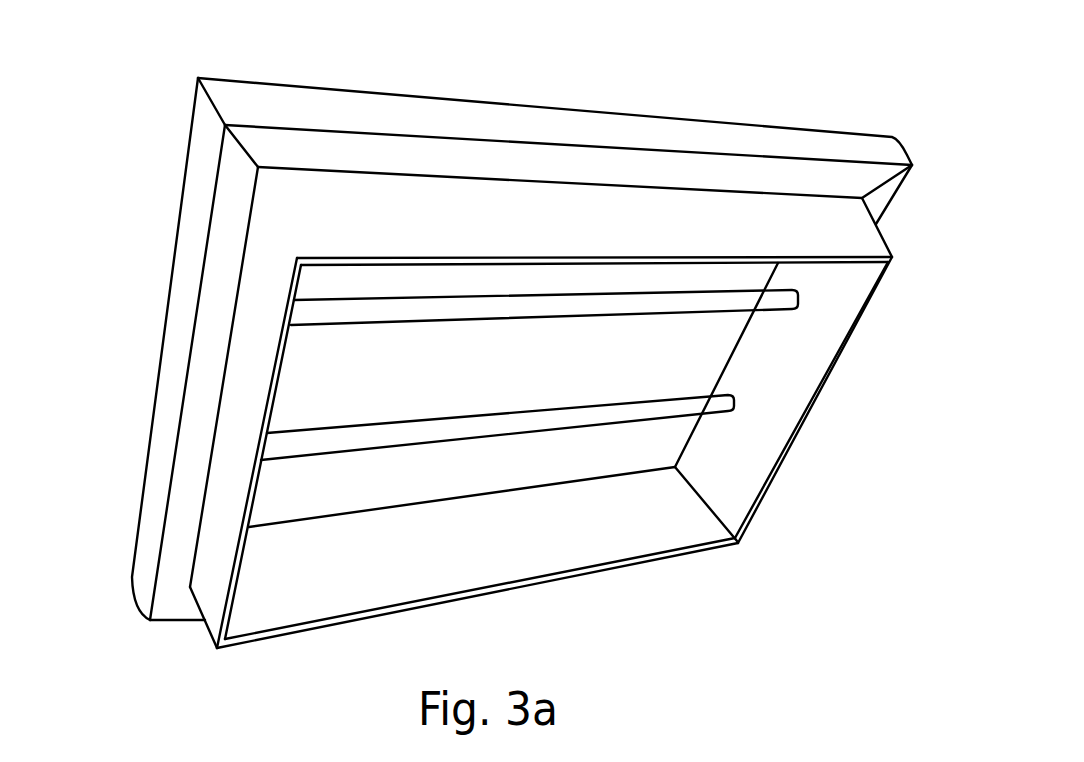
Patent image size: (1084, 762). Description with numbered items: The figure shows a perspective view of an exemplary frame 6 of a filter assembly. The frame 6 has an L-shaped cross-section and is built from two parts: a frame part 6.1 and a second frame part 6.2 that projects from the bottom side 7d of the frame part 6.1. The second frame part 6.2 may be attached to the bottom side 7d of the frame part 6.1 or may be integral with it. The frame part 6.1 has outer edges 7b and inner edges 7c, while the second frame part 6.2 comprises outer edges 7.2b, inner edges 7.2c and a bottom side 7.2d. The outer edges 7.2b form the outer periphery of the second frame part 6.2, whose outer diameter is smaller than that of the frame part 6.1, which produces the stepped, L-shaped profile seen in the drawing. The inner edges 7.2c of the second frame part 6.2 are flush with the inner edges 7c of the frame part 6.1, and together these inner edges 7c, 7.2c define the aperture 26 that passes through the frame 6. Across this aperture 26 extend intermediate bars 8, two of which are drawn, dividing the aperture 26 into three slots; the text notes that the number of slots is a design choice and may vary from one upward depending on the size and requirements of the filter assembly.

The frame 6 is at (470, 383).
The frame part 6.1 is at (732, 163).
The second frame part 6.2 is at (215, 577).
The outer edges 7b is at (290, 110).
The inner edges 7c is at (308, 532).
The bottom side 7d is at (218, 257).
The outer edges 7.2b is at (237, 465).
The inner edges 7.2c is at (357, 593).
The bottom side 7.2d is at (693, 558).
The intermediate bars 8 is at (583, 412).
The aperture 26 is at (693, 348).